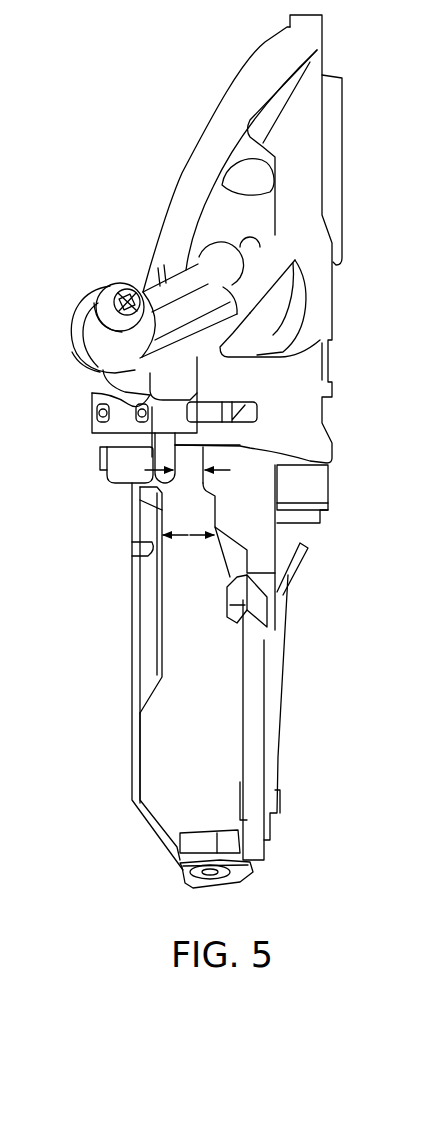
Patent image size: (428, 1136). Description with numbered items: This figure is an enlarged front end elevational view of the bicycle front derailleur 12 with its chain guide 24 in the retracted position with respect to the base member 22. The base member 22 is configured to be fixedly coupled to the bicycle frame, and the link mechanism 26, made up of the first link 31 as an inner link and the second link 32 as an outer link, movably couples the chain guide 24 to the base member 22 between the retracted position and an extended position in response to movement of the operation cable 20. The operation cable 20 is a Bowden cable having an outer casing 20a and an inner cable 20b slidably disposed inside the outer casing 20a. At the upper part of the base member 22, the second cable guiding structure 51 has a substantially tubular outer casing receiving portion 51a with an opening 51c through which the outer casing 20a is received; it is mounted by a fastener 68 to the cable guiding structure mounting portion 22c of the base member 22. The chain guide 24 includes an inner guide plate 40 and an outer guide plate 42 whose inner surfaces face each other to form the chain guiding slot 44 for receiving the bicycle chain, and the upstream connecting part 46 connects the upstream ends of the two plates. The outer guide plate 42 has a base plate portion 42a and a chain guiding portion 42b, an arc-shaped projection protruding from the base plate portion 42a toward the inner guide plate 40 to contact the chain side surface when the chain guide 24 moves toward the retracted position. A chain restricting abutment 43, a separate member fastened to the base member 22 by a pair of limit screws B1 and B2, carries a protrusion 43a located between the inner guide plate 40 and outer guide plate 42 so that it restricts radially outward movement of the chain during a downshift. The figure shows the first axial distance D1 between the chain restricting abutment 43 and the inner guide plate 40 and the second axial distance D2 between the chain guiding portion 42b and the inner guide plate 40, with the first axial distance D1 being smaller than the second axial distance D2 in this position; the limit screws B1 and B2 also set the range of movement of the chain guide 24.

The bicycle front derailleur 12 is at (152, 75).
The base member 22 is at (181, 171).
The cable guiding structure mounting portion 22c is at (220, 245).
The fastener 68 is at (163, 262).
The operation cable 20 is at (150, 243).
The outer casing 20a is at (95, 298).
The inner cable 20b is at (127, 296).
The second cable guiding structure 51 is at (77, 308).
The outer casing receiving portion 51a is at (85, 328).
The opening 51c is at (87, 352).
The limit screw B1 is at (97, 411).
The limit screw B2 is at (93, 393).
The second link 32 is at (214, 405).
The chain restricting abutment 43 is at (118, 440).
The protrusion 43a is at (122, 472).
The first axial distance D1 is at (187, 471).
The second axial distance D2 is at (190, 537).
The link mechanism 26 is at (334, 485).
The first link 31 is at (300, 568).
The inner guide plate 40 is at (280, 737).
The chain guide 24 is at (130, 720).
The outer guide plate 42 is at (133, 665).
The base plate portion 42a is at (142, 780).
The chain guiding portion 42b is at (160, 640).
The chain guiding slot 44 is at (177, 780).
The upstream connecting part 46 is at (242, 878).